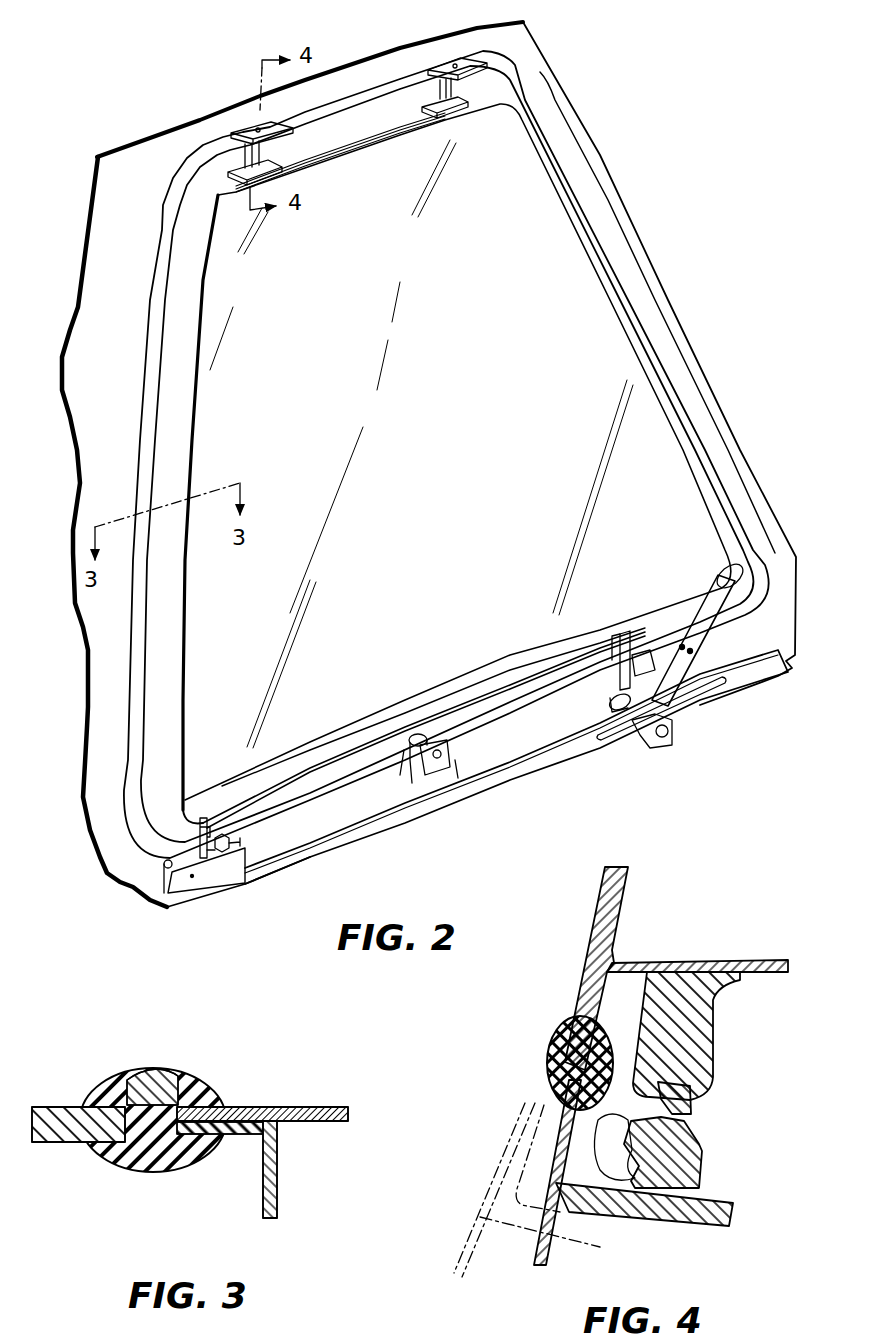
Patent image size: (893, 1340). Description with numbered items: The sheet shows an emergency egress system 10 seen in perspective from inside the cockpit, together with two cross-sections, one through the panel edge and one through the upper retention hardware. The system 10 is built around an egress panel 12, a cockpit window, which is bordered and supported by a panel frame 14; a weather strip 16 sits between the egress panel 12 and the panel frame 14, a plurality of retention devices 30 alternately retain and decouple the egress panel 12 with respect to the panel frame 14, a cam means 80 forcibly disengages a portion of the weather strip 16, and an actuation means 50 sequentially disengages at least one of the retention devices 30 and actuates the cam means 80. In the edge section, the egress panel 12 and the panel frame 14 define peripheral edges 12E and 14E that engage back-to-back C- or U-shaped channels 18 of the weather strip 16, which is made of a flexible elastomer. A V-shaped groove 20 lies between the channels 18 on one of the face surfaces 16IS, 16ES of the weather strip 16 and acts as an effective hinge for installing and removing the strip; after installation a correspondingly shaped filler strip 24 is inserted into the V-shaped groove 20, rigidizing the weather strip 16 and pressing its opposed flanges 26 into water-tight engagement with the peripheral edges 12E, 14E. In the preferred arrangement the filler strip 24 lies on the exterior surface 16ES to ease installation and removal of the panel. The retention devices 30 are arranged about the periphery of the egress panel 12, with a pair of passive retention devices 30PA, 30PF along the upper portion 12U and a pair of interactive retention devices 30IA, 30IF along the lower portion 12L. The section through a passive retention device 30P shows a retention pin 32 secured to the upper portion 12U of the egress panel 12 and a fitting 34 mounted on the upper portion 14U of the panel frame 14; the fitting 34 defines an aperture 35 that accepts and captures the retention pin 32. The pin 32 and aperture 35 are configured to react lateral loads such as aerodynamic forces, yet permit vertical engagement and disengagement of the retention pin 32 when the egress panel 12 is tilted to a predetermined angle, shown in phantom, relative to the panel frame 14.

In FIG. 2, the emergency egress system 10 is at (637, 176).
In FIG. 2, the egress panel 12 is at (481, 443).
In FIG. 4, the egress panel 12 is at (530, 1252).
In FIG. 2, the upper portion of egress panel 12U is at (305, 147).
In FIG. 4, the upper portion of egress panel 12U is at (705, 1220).
In FIG. 2, the lower portion of egress panel 12L is at (303, 778).
In FIG. 3, the peripheral edge of egress panel 12E is at (253, 1107).
In FIG. 2, the panel frame 14 is at (92, 328).
In FIG. 4, the panel frame 14 is at (592, 910).
In FIG. 4, the upper portion of panel frame 14U is at (747, 958).
In FIG. 3, the peripheral edge of panel frame 14E is at (90, 1115).
In FIG. 2, the weather strip 16 is at (140, 402).
In FIG. 3, the weather strip 16 is at (193, 1165).
In FIG. 4, the weather strip 16 is at (580, 1063).
In FIG. 3, the exterior surface of weather strip 16ES is at (97, 1082).
In FIG. 3, the interior face surface of weather strip 16IS is at (158, 1173).
In FIG. 3, the C- or U-shaped channels 18 is at (108, 1167).
In FIG. 3, the V-shaped groove 20 is at (187, 1080).
In FIG. 3, the filler strip 24 is at (153, 1080).
In FIG. 3, the opposed flanges 26 is at (213, 1103).
In FIG. 2, the retention devices 30 is at (452, 246).
In FIG. 2, the passive retention device 30PA is at (270, 172).
In FIG. 2, the passive retention device 30PF is at (447, 118).
In FIG. 2, the interactive retention device 30IA is at (224, 808).
In FIG. 2, the interactive retention device 30IF is at (620, 640).
In FIG. 4, the upper clip 30P is at (751, 1062).
In FIG. 4, the retention pin 32 is at (672, 1125).
In FIG. 4, the fitting 34 is at (706, 1026).
In FIG. 4, the aperture 35 is at (690, 1105).
In FIG. 2, the actuation means 50 is at (531, 725).
In FIG. 2, the cam means 80 is at (655, 628).